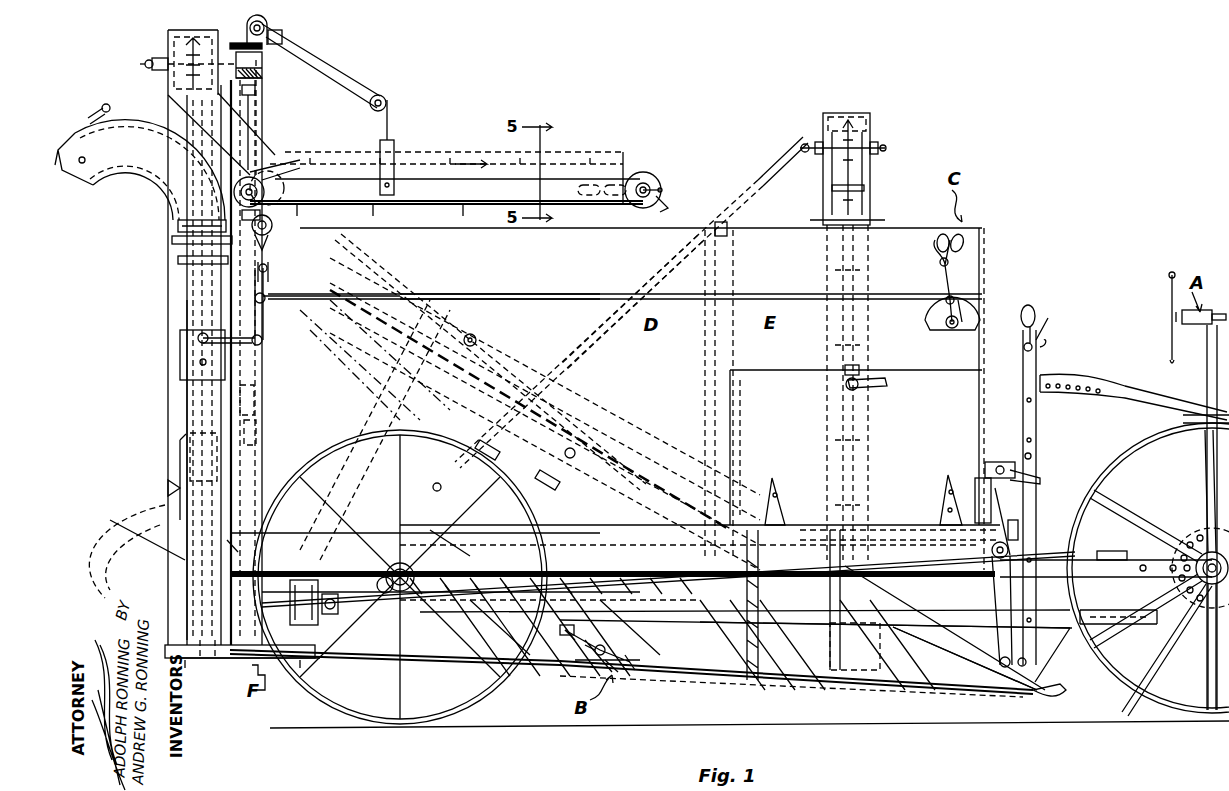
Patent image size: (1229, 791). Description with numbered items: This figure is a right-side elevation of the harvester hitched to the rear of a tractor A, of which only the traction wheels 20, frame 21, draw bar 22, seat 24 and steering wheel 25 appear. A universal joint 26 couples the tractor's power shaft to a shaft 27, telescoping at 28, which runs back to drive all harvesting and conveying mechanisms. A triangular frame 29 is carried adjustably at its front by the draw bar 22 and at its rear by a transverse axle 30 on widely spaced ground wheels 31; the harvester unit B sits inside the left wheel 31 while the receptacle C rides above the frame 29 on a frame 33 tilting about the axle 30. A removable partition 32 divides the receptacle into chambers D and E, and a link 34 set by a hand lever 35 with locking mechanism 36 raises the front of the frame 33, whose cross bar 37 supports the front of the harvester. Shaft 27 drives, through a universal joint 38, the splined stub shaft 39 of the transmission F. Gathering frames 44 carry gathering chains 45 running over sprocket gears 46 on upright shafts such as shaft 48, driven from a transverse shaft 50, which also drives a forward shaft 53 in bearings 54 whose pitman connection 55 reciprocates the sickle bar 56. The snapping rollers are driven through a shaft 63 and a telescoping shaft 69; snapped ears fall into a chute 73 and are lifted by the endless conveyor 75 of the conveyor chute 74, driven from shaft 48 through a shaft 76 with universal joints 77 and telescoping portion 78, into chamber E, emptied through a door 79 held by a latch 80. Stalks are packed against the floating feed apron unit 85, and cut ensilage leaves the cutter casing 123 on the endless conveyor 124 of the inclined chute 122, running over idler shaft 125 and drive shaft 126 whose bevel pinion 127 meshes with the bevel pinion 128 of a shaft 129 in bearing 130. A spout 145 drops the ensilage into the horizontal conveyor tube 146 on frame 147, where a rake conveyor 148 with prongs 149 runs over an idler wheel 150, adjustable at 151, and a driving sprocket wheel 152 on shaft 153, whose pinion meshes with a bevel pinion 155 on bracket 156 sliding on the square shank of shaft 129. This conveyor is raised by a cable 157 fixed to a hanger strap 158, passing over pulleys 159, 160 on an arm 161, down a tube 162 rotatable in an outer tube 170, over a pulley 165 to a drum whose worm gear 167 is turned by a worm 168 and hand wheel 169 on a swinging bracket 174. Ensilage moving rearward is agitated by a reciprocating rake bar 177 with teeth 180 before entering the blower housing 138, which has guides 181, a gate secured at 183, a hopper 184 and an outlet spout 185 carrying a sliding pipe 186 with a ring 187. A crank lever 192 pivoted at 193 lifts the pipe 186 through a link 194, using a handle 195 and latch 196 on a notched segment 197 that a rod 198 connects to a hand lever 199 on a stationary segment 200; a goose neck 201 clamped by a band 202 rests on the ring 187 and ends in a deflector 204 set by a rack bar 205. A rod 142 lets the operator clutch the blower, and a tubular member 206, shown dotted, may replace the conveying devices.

The traction wheels 20 is at (1172, 690).
The frame 21 is at (1168, 517).
The draw bar 22 is at (1108, 626).
The seat 24 is at (1082, 380).
The steering wheel 25 is at (1170, 318).
The universal joint 26 is at (1182, 545).
The shaft 27 is at (350, 610).
The telescoping portion 28 is at (1112, 551).
The triangular frame 29 is at (1048, 627).
The axle or shaft 30 is at (372, 605).
The ground wheels 31 is at (400, 722).
The removable partition 32 is at (728, 226).
The frame 33 is at (905, 525).
The link 34 is at (995, 582).
The hand lever 35 is at (1026, 402).
The locking mechanism 36 is at (1042, 340).
The forward cross bar 37 is at (750, 657).
The universal joint 38 is at (333, 616).
The splined stub shaft 39 is at (318, 628).
The gathering frames 44 is at (980, 653).
The gathering chains 45 is at (445, 535).
The sprocket gears 46 is at (515, 398).
The upright shaft 48 is at (437, 483).
The transverse shaft 50 is at (380, 586).
The forwardly extending shaft 53 is at (567, 632).
The bearings 54 is at (587, 657).
The pitman connection 55 is at (613, 670).
The sickle bar 56 is at (630, 670).
The shaft 63 is at (580, 473).
The shaft 69 is at (570, 453).
The chute 73 is at (805, 622).
The conveyor chute 74 is at (872, 118).
The endless conveyor 75 is at (855, 187).
The shaft 76 is at (700, 225).
The universal joints 77 is at (804, 142).
The telescoping portion 78 is at (762, 182).
The door 79 is at (844, 447).
The latch 80 is at (860, 380).
The feed apron unit 85 is at (478, 338).
The inclined conveyor chute 122 is at (180, 410).
The casing 123 is at (243, 642).
The endless conveyor 124 is at (250, 175).
The shaft 125 is at (210, 660).
The shaft 126 is at (145, 64).
The bevel pinion 127 is at (247, 173).
The bevel pinion 128 is at (262, 80).
The shaft 129 is at (250, 112).
The bearing 130 is at (255, 92).
The blower housing 138 is at (190, 443).
The rod 142 is at (1015, 527).
The apron or spout 145 is at (240, 142).
The conveyor tube 146 is at (330, 162).
The board or frame 147 is at (416, 190).
The endless rake acting conveyor 148 is at (655, 172).
The prongs 149 is at (665, 197).
The idler wheel 150 is at (643, 172).
The adjustment 151 is at (620, 196).
The sprocket wheel 152 is at (262, 190).
The shaft 153 is at (268, 185).
The bevel pinion 155 is at (272, 226).
The bracket 156 is at (268, 213).
The cable 157 is at (390, 118).
The hanger strap 158 is at (394, 152).
The pulley 159 is at (386, 101).
The pulley 160 is at (265, 27).
The arm 161 is at (318, 66).
The tube 162 is at (284, 46).
The pulley 165 is at (1008, 548).
The worm gear 167 is at (1040, 476).
The worm 168 is at (1000, 462).
The hand wheel 169 is at (1030, 455).
The outer tube 170 is at (260, 123).
The bracket 174 is at (983, 488).
The rake bar 177 is at (244, 398).
The teeth 180 is at (250, 420).
The guides 181 is at (178, 463).
The securing means 183 is at (170, 484).
The hopper 184 is at (180, 558).
The outlet spout 185 is at (200, 390).
The pipe or cylinder 186 is at (185, 262).
The flange or ring 187 is at (172, 240).
The crank lever 192 is at (200, 338).
The pivot 193 is at (265, 342).
The connecting link 194 is at (200, 355).
The handle 195 is at (262, 238).
The latch 196 is at (272, 270).
The notched segment 197 is at (300, 297).
The rod 198 is at (575, 294).
The hand lever 199 is at (952, 246).
The stationary segment 200 is at (972, 308).
The goose neck or elbow 201 is at (168, 178).
The clamping band 202 is at (178, 226).
The adjustable deflector 204 is at (66, 162).
The adjusting rack bar 205 is at (86, 120).
The tubular member 206 is at (110, 550).